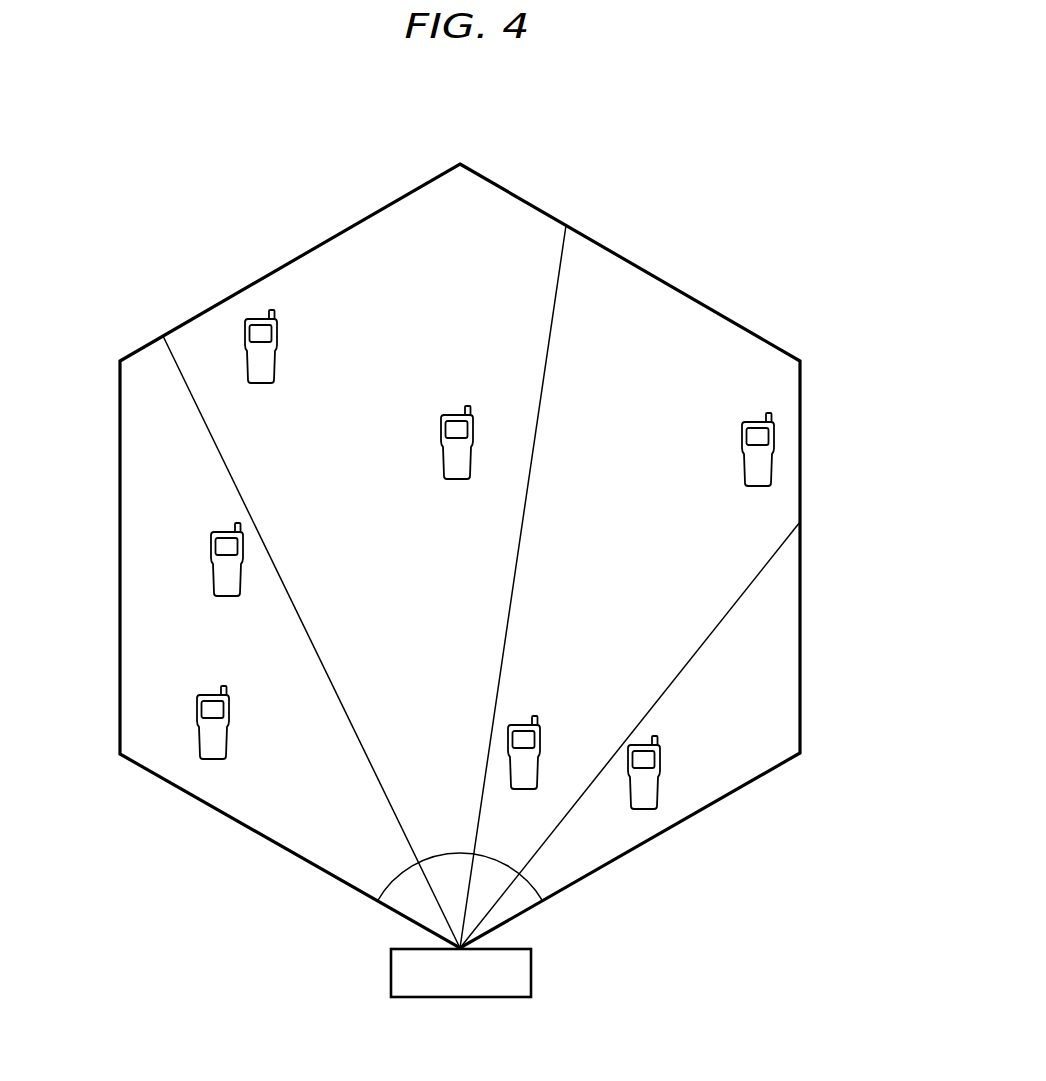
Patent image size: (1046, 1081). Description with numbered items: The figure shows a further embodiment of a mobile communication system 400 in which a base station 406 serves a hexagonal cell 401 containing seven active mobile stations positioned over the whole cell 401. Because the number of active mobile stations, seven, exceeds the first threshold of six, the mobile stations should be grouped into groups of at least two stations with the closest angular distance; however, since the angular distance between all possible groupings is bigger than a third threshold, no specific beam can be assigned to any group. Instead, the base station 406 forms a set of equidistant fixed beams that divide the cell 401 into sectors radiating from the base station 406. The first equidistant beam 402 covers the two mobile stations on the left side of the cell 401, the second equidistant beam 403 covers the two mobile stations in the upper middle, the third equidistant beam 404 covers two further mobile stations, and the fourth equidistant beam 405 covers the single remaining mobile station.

The mobile communication system 400 is at (653, 120).
The cell 401 is at (160, 754).
The first equidistant beam 402 is at (153, 369).
The second equidistant beam 403 is at (349, 243).
The third equidistant beam 404 is at (680, 307).
The fourth equidistant beam 405 is at (693, 795).
The base station 406 is at (447, 997).